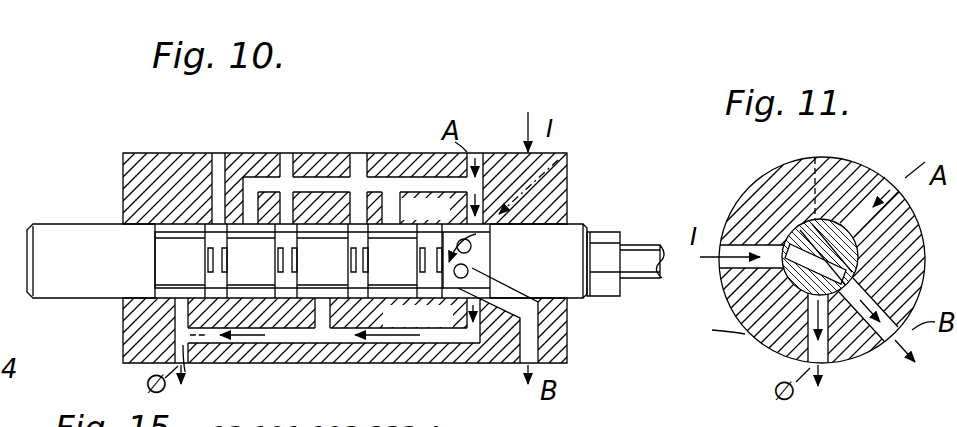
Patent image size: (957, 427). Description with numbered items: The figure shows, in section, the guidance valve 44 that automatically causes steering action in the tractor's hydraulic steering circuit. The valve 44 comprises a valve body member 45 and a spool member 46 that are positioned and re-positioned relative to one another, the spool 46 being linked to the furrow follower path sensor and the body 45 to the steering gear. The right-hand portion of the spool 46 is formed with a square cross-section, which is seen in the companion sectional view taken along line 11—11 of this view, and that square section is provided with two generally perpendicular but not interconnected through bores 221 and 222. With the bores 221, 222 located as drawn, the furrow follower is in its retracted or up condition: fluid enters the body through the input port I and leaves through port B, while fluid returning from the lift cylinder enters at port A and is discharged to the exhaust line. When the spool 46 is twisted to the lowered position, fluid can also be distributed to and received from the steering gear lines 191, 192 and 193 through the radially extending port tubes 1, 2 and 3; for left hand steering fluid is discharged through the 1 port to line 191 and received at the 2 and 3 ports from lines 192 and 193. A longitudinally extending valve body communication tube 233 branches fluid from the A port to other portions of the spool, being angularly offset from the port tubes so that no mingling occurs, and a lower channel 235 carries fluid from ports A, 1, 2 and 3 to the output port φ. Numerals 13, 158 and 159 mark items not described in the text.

In FIG. 10, the section line for FIG. 13 is at (168, 206).
In FIG. 10, the line 11— 11 is at (450, 210).
In FIG. 10, the steering gear line 192 is at (218, 158).
In FIG. 10, the steering gear line 191 is at (287, 158).
In FIG. 10, the steering gear line 193 is at (358, 158).
In FIG. 10, the valve body communication tube 233 is at (394, 192).
In FIG. 10, the inlet bore A 159 is at (509, 117).
In FIG. 10, the valve body member 45 is at (570, 186).
In FIG. 11, the valve body member 45 is at (858, 345).
In FIG. 10, the valve spool member 46 is at (565, 240).
In FIG. 11, the valve spool member 46 is at (754, 338).
In FIG. 10, the guidance valve 44 is at (583, 312).
In FIG. 10, the lower channel 235 is at (300, 346).
In FIG. 11, the through bore 221 is at (821, 171).
In FIG. 11, the housing bore 158 is at (893, 154).
In FIG. 11, the through bore 222 is at (787, 240).
In FIG. 10, the valve 1 port 1 is at (289, 160).
In FIG. 10, the valve 2 port 2 is at (212, 152).
In FIG. 10, the valve 3 port 3 is at (362, 158).